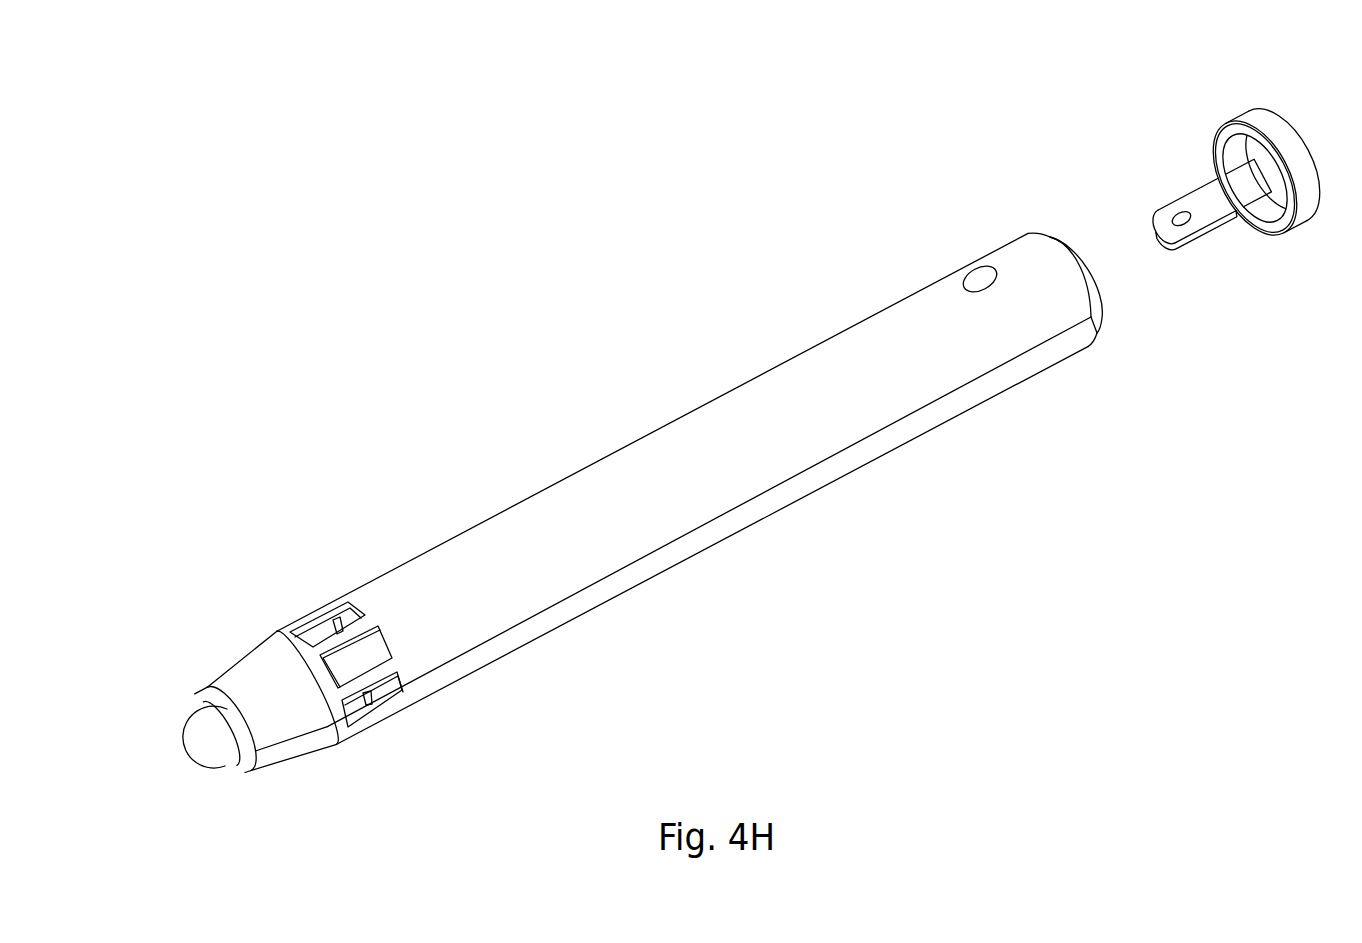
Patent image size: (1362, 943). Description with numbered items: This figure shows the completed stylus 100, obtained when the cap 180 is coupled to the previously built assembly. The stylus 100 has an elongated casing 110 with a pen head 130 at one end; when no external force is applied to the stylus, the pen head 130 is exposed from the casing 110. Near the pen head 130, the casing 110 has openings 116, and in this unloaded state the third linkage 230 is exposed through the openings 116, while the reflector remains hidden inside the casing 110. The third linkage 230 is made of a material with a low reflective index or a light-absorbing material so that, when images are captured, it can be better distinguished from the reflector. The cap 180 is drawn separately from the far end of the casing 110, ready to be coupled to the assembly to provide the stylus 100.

The stylus 100 is at (204, 65).
The casing 110 is at (848, 473).
The pen head 130 is at (192, 725).
The third linkage 230 is at (347, 662).
The openings 116 is at (363, 698).
The cap 180 is at (1274, 118).